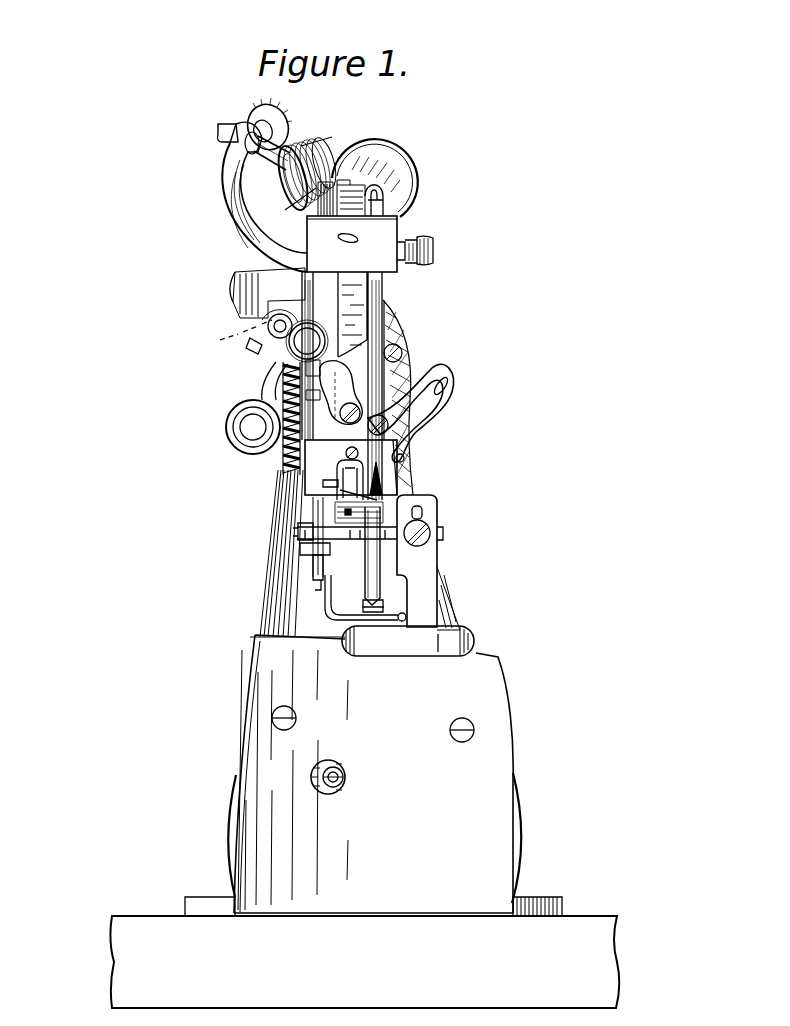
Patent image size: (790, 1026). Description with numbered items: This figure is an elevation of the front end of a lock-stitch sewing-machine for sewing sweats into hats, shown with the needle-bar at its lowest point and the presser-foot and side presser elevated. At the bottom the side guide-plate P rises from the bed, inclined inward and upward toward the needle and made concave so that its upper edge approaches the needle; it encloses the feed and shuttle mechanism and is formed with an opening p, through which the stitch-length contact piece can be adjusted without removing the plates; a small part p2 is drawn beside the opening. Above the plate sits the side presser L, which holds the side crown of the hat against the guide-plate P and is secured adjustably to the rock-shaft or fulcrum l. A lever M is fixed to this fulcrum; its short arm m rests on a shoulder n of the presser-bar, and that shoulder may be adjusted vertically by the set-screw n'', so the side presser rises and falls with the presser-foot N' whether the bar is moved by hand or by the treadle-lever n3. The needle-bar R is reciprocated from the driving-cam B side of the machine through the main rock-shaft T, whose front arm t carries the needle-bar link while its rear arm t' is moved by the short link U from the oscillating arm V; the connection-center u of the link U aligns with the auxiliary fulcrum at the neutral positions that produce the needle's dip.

The side guide-plate P is at (374, 774).
The opening p is at (336, 765).
The hub pin p2 is at (339, 773).
The side presser L is at (408, 641).
The rock-shaft or fulcrum l is at (428, 562).
The presser-foot N' is at (365, 609).
The short arm m is at (298, 537).
The shoulder n is at (347, 541).
The set-screw n'' is at (305, 572).
The needle-bar R is at (351, 459).
The driving-cam B is at (397, 413).
The arm t is at (342, 386).
The lever M is at (339, 370).
The treadle-lever n3 is at (267, 293).
The rock-shaft T is at (295, 336).
The rear arm t' is at (235, 333).
The link U is at (250, 354).
The oscillating arm V is at (275, 381).
The connection-center u is at (253, 427).